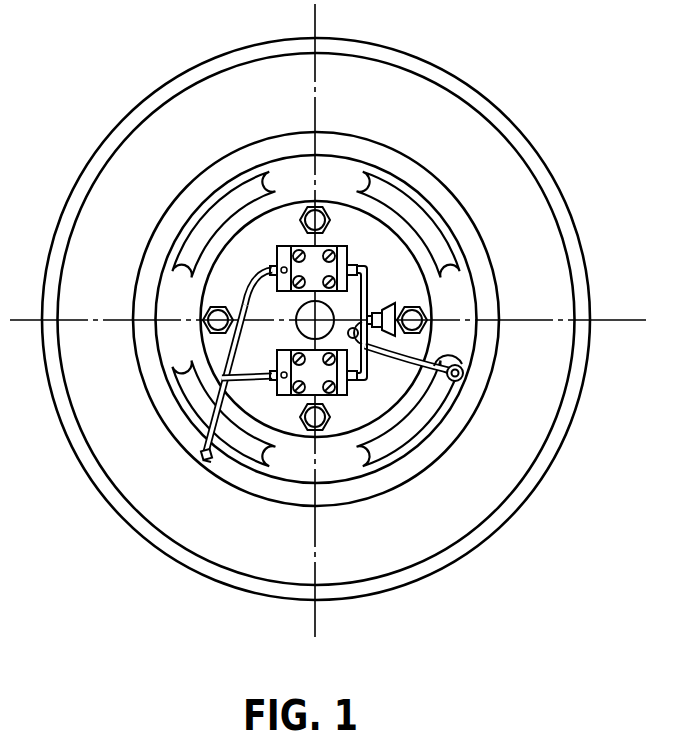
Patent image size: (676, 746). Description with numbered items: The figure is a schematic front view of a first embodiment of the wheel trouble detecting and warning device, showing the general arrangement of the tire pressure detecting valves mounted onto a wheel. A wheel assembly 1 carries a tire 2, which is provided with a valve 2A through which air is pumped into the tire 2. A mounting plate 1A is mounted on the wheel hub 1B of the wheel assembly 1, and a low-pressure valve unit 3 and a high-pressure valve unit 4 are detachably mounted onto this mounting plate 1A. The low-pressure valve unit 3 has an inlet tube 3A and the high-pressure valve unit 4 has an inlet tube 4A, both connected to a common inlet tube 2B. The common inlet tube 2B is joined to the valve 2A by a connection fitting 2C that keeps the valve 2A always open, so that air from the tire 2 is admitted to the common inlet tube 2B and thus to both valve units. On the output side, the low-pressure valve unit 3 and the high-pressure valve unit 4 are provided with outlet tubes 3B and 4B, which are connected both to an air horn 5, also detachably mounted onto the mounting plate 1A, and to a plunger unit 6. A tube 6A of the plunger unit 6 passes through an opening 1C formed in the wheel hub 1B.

The wheel assembly 1 is at (537, 498).
The mounting plate 1A is at (375, 290).
The wheel hub 1B is at (333, 463).
The opening 1C is at (382, 433).
The tire 2 is at (470, 88).
The valve 2A is at (200, 457).
The common inlet tube 2B is at (222, 413).
The connection fitting 2C is at (207, 463).
The low-pressure valve unit 3 is at (298, 246).
The inlet tube 3A is at (250, 318).
The outlet tube 3B is at (376, 292).
The high-pressure valve unit 4 is at (297, 397).
The inlet tube 4A is at (258, 380).
The outlet tube 4B is at (378, 381).
The air horn 5 is at (400, 306).
The plunger unit 6 is at (463, 378).
The tube 6A is at (450, 354).